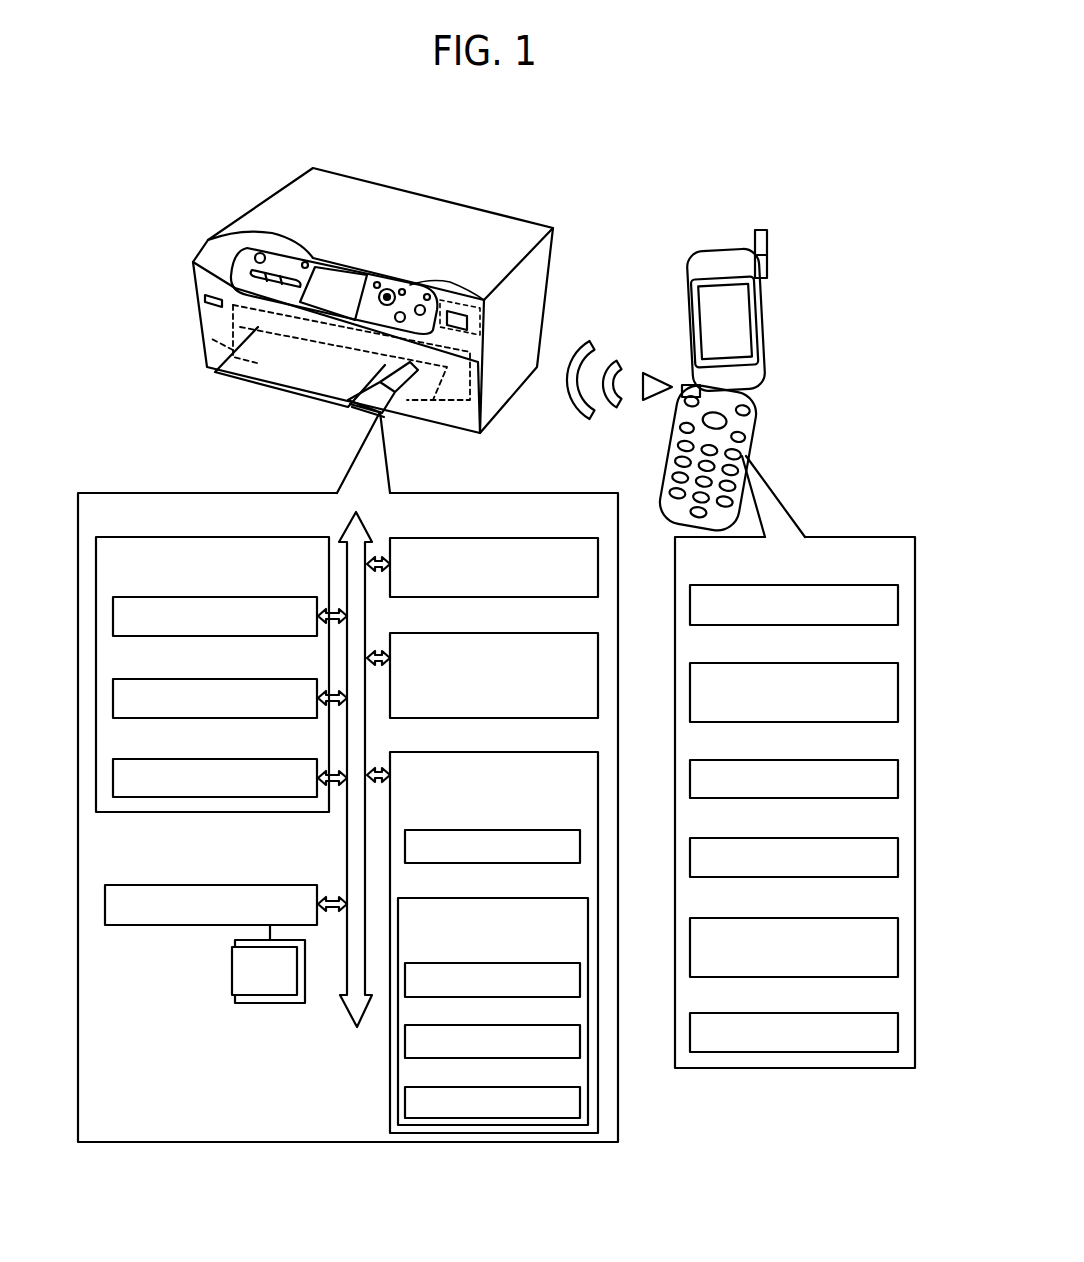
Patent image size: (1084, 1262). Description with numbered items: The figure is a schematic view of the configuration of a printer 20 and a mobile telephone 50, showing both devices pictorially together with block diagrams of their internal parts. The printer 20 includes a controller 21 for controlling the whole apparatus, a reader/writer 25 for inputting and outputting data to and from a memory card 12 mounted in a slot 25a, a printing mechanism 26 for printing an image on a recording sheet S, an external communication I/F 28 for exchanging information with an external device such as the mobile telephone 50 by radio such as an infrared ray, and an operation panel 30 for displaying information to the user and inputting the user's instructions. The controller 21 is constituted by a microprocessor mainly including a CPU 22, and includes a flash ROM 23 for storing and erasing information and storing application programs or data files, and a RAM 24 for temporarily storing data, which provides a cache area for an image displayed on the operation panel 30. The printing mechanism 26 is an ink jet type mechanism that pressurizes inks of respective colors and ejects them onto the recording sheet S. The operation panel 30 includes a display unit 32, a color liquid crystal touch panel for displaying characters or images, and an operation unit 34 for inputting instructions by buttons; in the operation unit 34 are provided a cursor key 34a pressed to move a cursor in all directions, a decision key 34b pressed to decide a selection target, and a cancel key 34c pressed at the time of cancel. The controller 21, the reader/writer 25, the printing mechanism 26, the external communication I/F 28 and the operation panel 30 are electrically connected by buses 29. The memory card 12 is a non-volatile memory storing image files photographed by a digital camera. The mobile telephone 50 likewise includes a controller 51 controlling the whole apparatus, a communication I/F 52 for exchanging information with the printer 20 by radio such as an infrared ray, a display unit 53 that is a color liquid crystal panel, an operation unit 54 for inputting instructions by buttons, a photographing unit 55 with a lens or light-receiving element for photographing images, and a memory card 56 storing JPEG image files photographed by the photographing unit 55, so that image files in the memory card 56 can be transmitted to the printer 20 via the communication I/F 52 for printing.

The printer 20 is at (455, 190).
The controller 21 is at (148, 537).
The CPU 22 is at (188, 597).
The flash ROM 23 is at (188, 679).
The RAM 24 is at (188, 759).
The reader/writer 25 is at (148, 885).
The slot 25a is at (204, 299).
The memory card 12 is at (232, 975).
The printing mechanism 26 is at (210, 338).
The external communication interface (I/F) 28 is at (477, 313).
The buses 29 is at (345, 1008).
The operation panel 30 is at (357, 244).
The display unit 32 is at (232, 250).
The operation unit 34 is at (473, 302).
The cursor key 34a is at (520, 963).
The decision key 34b is at (520, 1025).
The cancel key 34c is at (520, 1087).
The recording sheet S is at (248, 383).
The mobile telephone 50 is at (745, 232).
The controller 51 is at (835, 585).
The communication interface (I/F) 52 is at (682, 385).
The display unit 53 is at (725, 331).
The operation unit 54 is at (740, 394).
The photographing unit 55 is at (835, 918).
The memory card 56 is at (835, 1013).